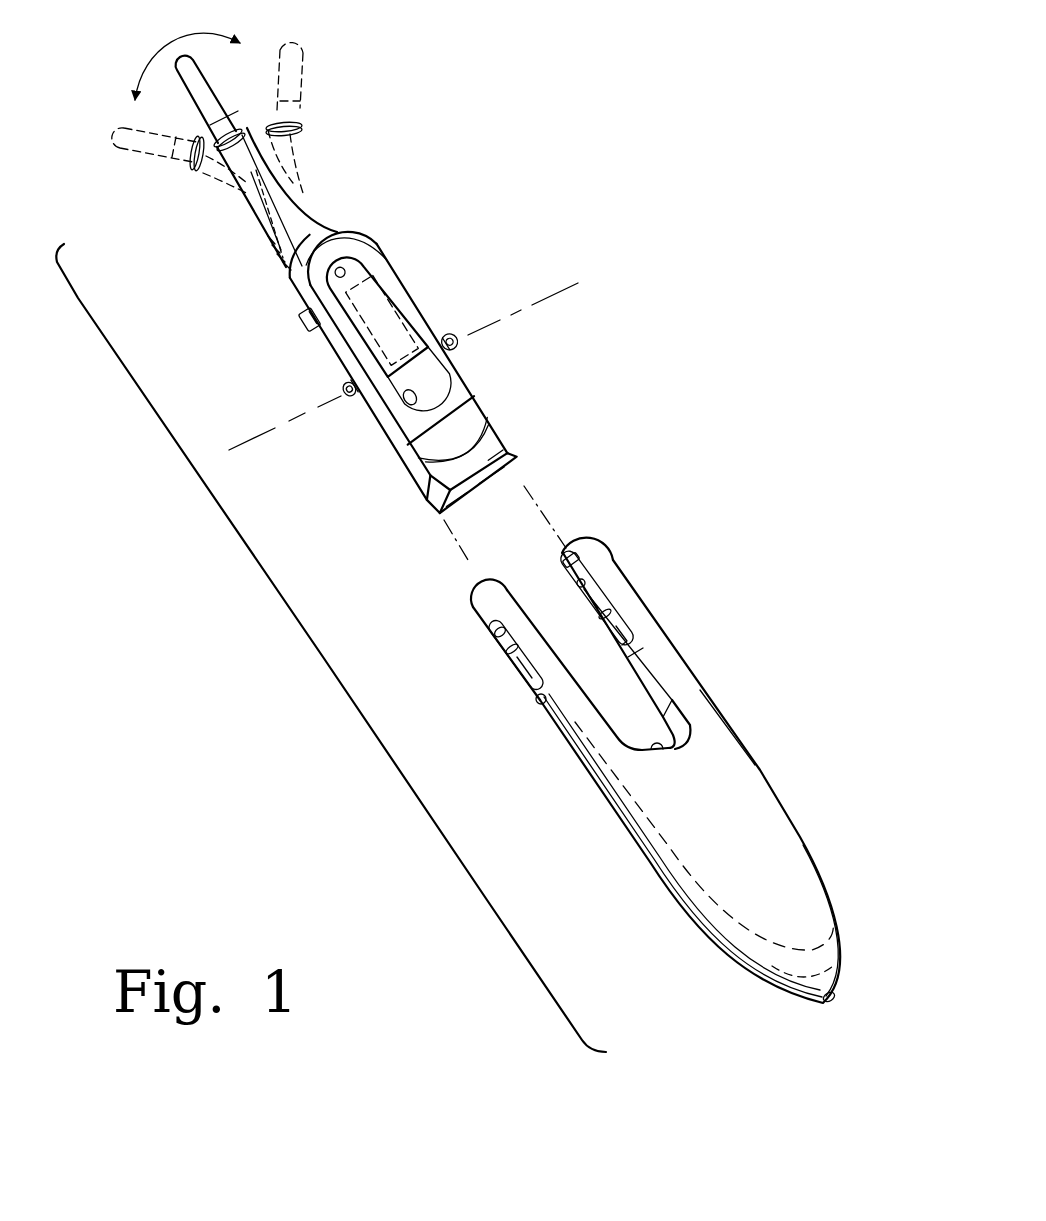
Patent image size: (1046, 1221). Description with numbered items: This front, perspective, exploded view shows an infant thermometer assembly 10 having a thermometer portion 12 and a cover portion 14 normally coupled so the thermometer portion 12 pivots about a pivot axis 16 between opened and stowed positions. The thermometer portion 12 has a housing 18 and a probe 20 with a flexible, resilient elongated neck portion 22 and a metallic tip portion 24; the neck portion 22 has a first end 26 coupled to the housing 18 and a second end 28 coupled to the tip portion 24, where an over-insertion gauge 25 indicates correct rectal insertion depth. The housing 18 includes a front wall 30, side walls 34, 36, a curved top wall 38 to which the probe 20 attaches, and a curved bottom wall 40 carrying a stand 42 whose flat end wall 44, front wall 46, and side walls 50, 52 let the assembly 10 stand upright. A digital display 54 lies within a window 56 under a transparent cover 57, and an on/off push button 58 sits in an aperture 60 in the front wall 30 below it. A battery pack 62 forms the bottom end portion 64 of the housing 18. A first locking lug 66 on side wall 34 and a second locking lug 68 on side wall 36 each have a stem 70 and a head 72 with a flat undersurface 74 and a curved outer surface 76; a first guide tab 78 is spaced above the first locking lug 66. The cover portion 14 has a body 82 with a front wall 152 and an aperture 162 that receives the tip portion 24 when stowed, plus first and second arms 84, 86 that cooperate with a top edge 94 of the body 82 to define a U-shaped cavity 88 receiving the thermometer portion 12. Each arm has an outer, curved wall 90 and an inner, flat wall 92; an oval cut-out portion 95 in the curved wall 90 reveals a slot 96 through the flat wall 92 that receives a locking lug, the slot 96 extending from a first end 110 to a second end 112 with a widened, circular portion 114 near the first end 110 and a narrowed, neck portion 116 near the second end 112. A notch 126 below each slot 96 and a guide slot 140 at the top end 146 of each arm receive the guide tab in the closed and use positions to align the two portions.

The infant thermometer assembly 10 is at (326, 664).
The thermometer portion 12 is at (451, 160).
The cover portion 14 is at (766, 646).
The pivot axis 16 is at (555, 288).
The housing 18 is at (416, 281).
The probe 20 is at (211, 207).
The elongated neck portion 22 is at (301, 157).
The tip portion 24 is at (224, 90).
The over-insertion gauge 25 is at (228, 124).
The first end 26 is at (299, 219).
The second end 28 is at (244, 118).
The front wall 30 is at (351, 247).
The side wall 34 is at (306, 346).
The side wall 36 is at (427, 318).
The curved top wall 38 is at (287, 262).
The curved bottom wall 40 is at (407, 490).
The stand 42 is at (531, 451).
The end wall 44 is at (523, 480).
The front wall 46 is at (456, 485).
The side wall 50 is at (447, 490).
The side wall 52 is at (521, 478).
The digital display 54 is at (392, 244).
The window 56 is at (333, 275).
The transparent cover 57 is at (420, 334).
The on/off push button 58 is at (456, 384).
The aperture 60 is at (407, 400).
The battery pack 62 is at (517, 430).
The bottom end portion 64 is at (384, 477).
The first locking lug 66 is at (320, 381).
The second locking lug 68 is at (470, 361).
The stem 70 is at (407, 388).
The head 72 is at (337, 391).
The flat undersurface 74 is at (463, 338).
The curved outer surface 76 is at (464, 343).
The first guide tab 78 is at (297, 322).
The body 82 is at (690, 921).
The first arm 84 is at (457, 652).
The second arm 86 is at (627, 527).
The U-shaped cavity 88 is at (520, 586).
The outer, curved wall 90 is at (664, 638).
The inner, flat wall 92 is at (632, 660).
The top edge 94 is at (663, 748).
The cut-out portion 95 is at (614, 553).
The slot 96 is at (595, 582).
The first end 110 is at (561, 548).
The second end 112 is at (637, 606).
The widened, circular portion 114 is at (572, 594).
The narrowed, neck portion 116 is at (597, 620).
The notch 126 is at (648, 668).
The guide slot 140 is at (567, 553).
The top end 146 is at (597, 551).
The front wall 152 is at (777, 857).
The aperture 162 is at (830, 1000).